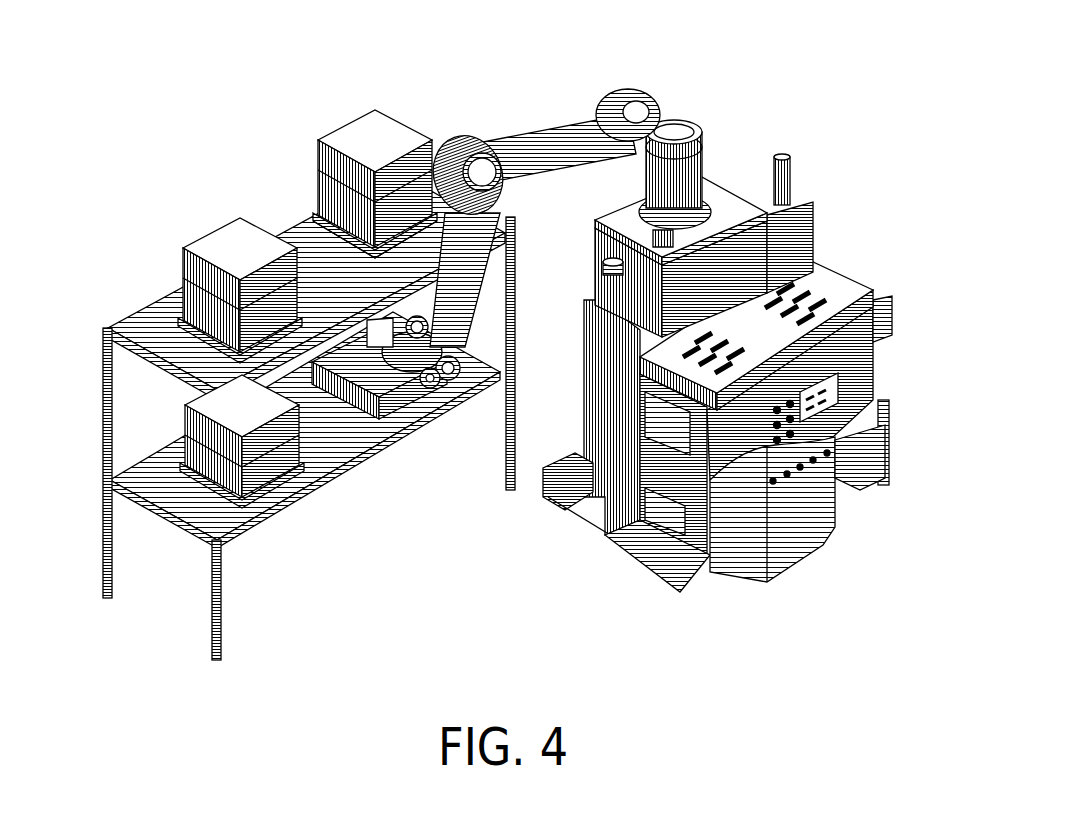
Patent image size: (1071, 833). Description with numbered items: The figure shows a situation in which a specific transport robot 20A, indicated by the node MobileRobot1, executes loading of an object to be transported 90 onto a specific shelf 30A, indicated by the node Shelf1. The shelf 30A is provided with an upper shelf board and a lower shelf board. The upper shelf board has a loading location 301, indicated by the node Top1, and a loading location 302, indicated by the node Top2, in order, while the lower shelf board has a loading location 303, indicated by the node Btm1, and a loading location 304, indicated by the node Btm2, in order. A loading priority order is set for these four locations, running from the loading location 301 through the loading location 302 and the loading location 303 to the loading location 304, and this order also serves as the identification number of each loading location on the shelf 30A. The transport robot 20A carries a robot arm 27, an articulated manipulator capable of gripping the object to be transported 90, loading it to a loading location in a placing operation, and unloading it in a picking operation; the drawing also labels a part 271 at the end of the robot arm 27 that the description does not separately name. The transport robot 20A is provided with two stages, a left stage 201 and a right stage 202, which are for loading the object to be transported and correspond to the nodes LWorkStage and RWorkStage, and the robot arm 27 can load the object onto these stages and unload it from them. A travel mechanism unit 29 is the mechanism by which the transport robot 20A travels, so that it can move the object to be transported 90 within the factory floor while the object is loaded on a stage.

The transport robot 20A is at (752, 413).
The left stage 201 is at (801, 292).
The right stage 202 is at (745, 345).
The robot arm 27 is at (558, 280).
The end effector 271 is at (457, 378).
The travel mechanism unit 29 is at (917, 383).
The shelf 30A is at (279, 343).
The loading location 301 is at (293, 343).
The loading location 302 is at (427, 257).
The loading location 303 is at (285, 487).
The loading location 304 is at (420, 413).
The object to be transported 90 is at (385, 140).